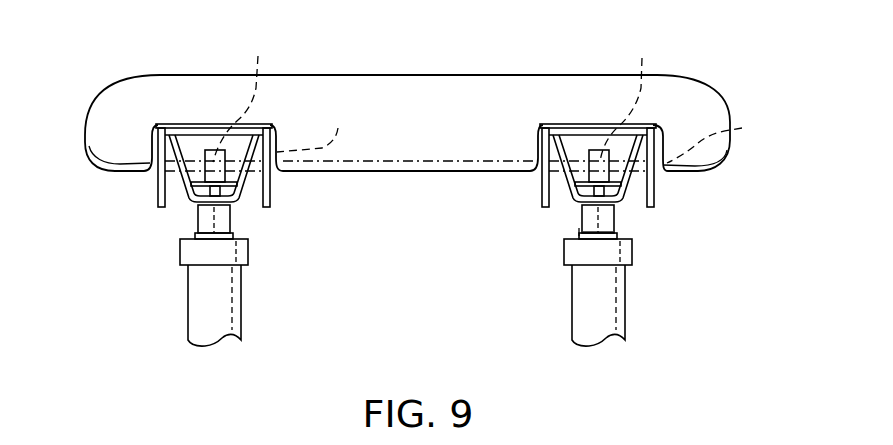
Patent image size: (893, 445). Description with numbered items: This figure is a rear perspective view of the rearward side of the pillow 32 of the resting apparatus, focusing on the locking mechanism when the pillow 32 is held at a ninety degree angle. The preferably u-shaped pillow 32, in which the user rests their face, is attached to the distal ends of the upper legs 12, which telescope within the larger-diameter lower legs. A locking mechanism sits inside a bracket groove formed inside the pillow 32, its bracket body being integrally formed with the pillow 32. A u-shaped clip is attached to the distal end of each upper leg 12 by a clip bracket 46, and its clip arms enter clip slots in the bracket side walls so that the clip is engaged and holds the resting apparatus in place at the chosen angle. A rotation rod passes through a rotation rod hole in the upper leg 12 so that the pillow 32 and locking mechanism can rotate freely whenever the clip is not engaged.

The upper legs 12 is at (633, 225).
The pillow 32 is at (717, 90).
The clip bracket 46 is at (554, 253).